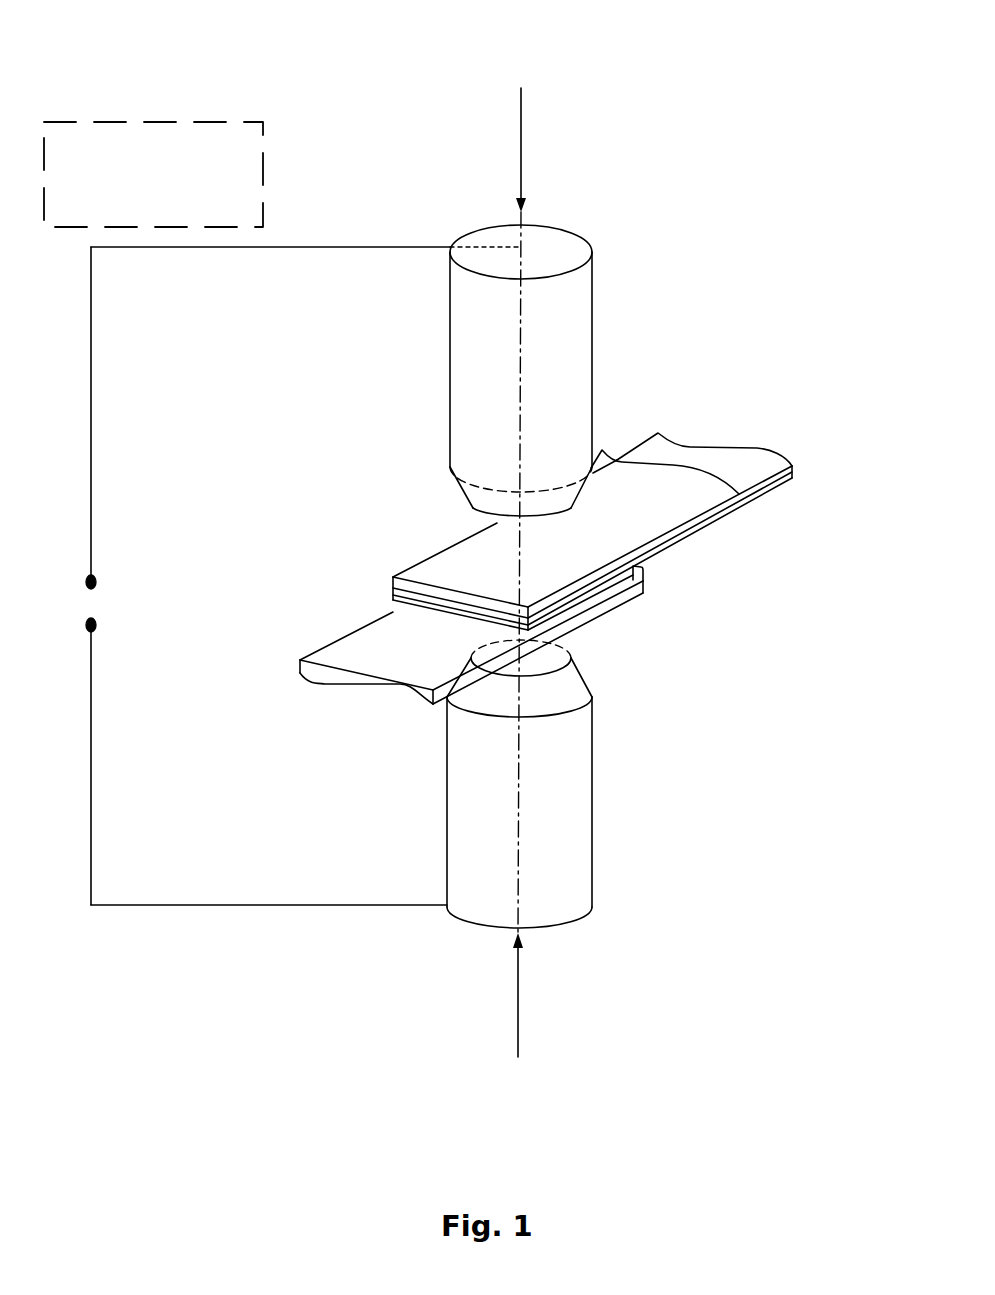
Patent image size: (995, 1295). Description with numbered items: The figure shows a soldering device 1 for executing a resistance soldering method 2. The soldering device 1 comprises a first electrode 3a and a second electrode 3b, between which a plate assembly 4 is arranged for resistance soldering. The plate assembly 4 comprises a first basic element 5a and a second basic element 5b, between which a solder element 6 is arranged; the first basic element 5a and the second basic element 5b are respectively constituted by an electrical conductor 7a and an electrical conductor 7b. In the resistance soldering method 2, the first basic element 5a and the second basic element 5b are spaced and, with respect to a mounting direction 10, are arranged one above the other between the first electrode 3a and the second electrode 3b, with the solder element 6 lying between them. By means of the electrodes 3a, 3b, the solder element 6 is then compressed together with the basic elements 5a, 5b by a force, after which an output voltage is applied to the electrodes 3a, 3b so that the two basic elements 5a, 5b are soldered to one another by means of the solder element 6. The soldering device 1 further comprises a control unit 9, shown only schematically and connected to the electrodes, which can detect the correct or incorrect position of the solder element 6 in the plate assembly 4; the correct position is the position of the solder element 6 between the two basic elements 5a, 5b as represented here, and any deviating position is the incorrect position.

The soldering device 1 is at (575, 572).
The resistance soldering method 2 is at (806, 43).
The first electrode 3a is at (557, 363).
The second electrode 3b is at (550, 763).
The plate assembly 4 is at (566, 536).
The first basic element 5a is at (592, 531).
The second basic element 5b is at (449, 635).
The solder element 6 is at (716, 456).
The electrical conductor 7a is at (628, 522).
The electrical conductor 7b is at (346, 648).
The control unit 9 is at (164, 184).
The mounting direction 10 is at (522, 408).